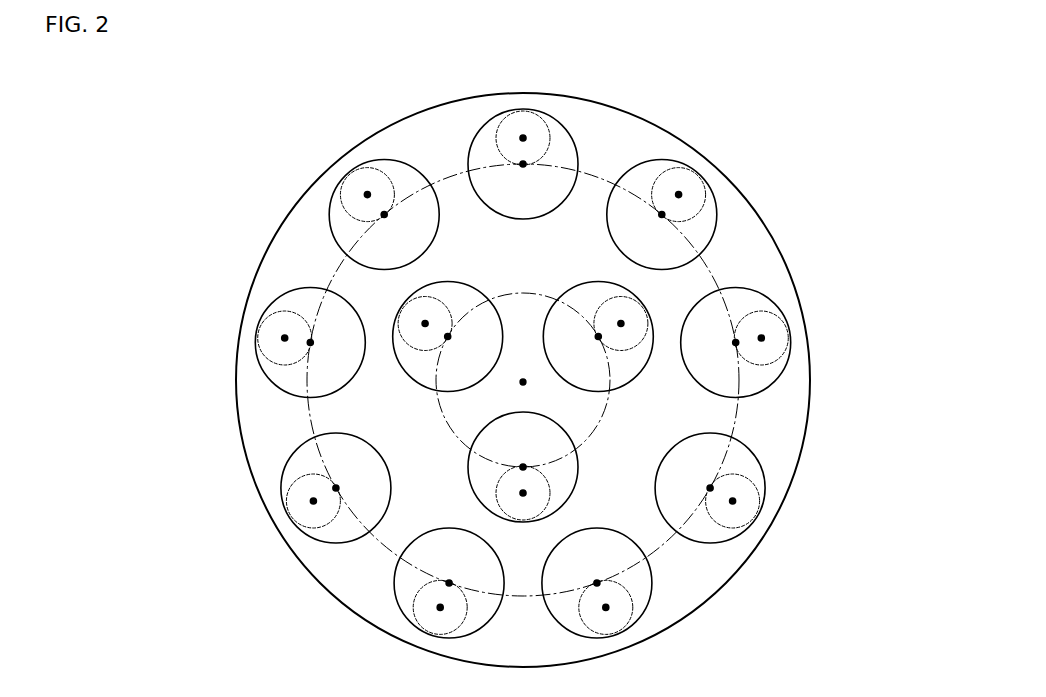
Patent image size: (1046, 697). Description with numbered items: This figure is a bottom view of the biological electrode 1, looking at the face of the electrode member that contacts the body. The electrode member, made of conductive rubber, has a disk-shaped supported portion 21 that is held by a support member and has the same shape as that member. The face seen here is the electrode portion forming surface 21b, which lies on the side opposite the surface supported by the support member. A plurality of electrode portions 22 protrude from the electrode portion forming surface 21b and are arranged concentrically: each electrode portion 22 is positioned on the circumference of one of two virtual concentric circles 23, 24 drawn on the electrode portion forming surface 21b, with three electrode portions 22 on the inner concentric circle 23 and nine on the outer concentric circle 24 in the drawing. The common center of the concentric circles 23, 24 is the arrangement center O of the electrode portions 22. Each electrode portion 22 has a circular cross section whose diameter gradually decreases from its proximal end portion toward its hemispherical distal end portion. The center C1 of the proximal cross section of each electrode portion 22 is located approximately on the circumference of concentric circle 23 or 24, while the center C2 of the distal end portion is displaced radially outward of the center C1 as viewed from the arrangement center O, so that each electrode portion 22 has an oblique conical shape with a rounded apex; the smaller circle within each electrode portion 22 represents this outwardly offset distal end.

The biological electrode 1 is at (767, 168).
The supported portion 21 is at (236, 408).
The electrode portion forming surface 21b is at (293, 253).
The electrode portions 22 is at (410, 178).
The concentric circle 23 is at (593, 433).
The concentric circle 24 is at (722, 271).
The arrangement center O is at (520, 382).
The center of the cross section of the proximal end portion C1 is at (384, 217).
The center of the distal end portion C2 is at (367, 194).